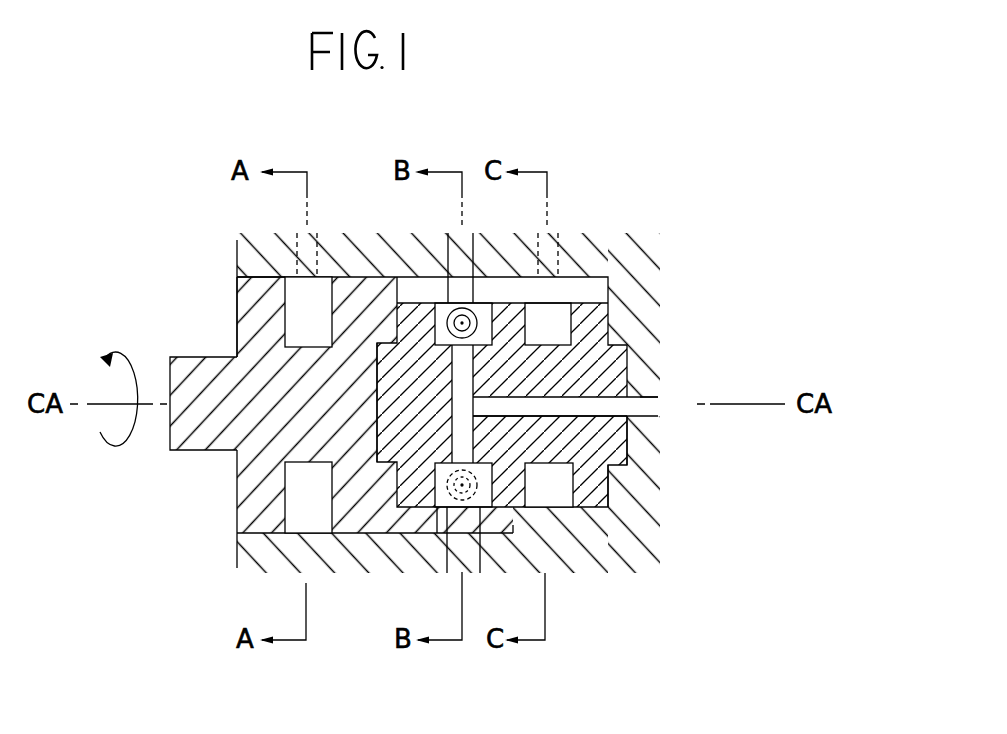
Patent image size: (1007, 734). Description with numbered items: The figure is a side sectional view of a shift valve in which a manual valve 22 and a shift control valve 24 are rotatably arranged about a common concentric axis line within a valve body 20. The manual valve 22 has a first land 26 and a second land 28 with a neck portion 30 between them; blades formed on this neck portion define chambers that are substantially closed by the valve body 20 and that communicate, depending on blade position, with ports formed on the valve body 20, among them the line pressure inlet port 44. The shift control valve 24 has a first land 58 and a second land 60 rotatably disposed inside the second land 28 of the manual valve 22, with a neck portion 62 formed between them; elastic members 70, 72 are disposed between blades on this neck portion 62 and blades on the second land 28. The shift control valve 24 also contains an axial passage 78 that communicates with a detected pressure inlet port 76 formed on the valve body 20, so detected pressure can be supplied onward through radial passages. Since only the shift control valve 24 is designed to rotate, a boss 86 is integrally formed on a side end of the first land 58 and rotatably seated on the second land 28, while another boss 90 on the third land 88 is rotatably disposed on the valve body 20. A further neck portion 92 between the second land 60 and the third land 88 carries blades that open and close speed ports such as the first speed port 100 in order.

The valve body 20 is at (428, 391).
The manual valve 22 is at (226, 477).
The shift control valve 24 is at (638, 438).
The first land 26 is at (291, 373).
The second land 28 is at (347, 308).
The neck portion 30 is at (247, 400).
The line pressure inlet port 44 is at (320, 253).
The first land 58 is at (417, 483).
The second land 60 is at (547, 453).
The neck portion 62 is at (459, 420).
The elastic member 70 is at (461, 303).
The elastic member 72 is at (430, 547).
The detected pressure inlet port 76 is at (660, 404).
The axial passage 78 is at (632, 398).
The boss 86 is at (390, 422).
The third land 88 is at (594, 449).
The boss 90 is at (613, 432).
The neck portion 92 is at (587, 485).
The first speed port 100 is at (568, 255).